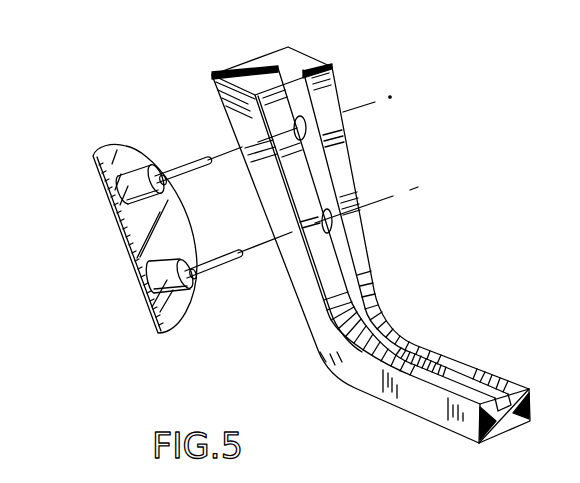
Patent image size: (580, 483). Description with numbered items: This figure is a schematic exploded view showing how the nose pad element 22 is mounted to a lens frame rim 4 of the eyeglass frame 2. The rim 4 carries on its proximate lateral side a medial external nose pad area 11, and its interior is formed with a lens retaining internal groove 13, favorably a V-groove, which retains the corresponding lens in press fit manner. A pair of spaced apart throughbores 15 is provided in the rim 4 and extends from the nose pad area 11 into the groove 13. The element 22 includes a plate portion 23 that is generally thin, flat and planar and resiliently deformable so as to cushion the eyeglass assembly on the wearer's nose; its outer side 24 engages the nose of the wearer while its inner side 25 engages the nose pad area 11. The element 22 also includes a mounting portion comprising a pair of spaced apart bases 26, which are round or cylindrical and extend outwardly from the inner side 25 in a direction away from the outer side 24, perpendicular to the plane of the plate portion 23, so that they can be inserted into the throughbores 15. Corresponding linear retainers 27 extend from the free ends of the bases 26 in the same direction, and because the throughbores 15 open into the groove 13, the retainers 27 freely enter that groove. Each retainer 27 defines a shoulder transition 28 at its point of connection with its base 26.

The eyeglass frame 2 is at (331, 377).
The eyeglass lens frame rim 4 is at (438, 412).
The nose pad area 11 is at (241, 65).
The lens retaining internal groove 13 is at (497, 398).
The throughbores 15 is at (303, 122).
The element 22 is at (110, 236).
The plate portion 23 is at (135, 255).
The outer side 24 is at (93, 172).
The inner side 25 is at (114, 158).
The bases 26 is at (140, 171).
The retainers 27 is at (188, 173).
The shoulder transition 28 is at (161, 177).